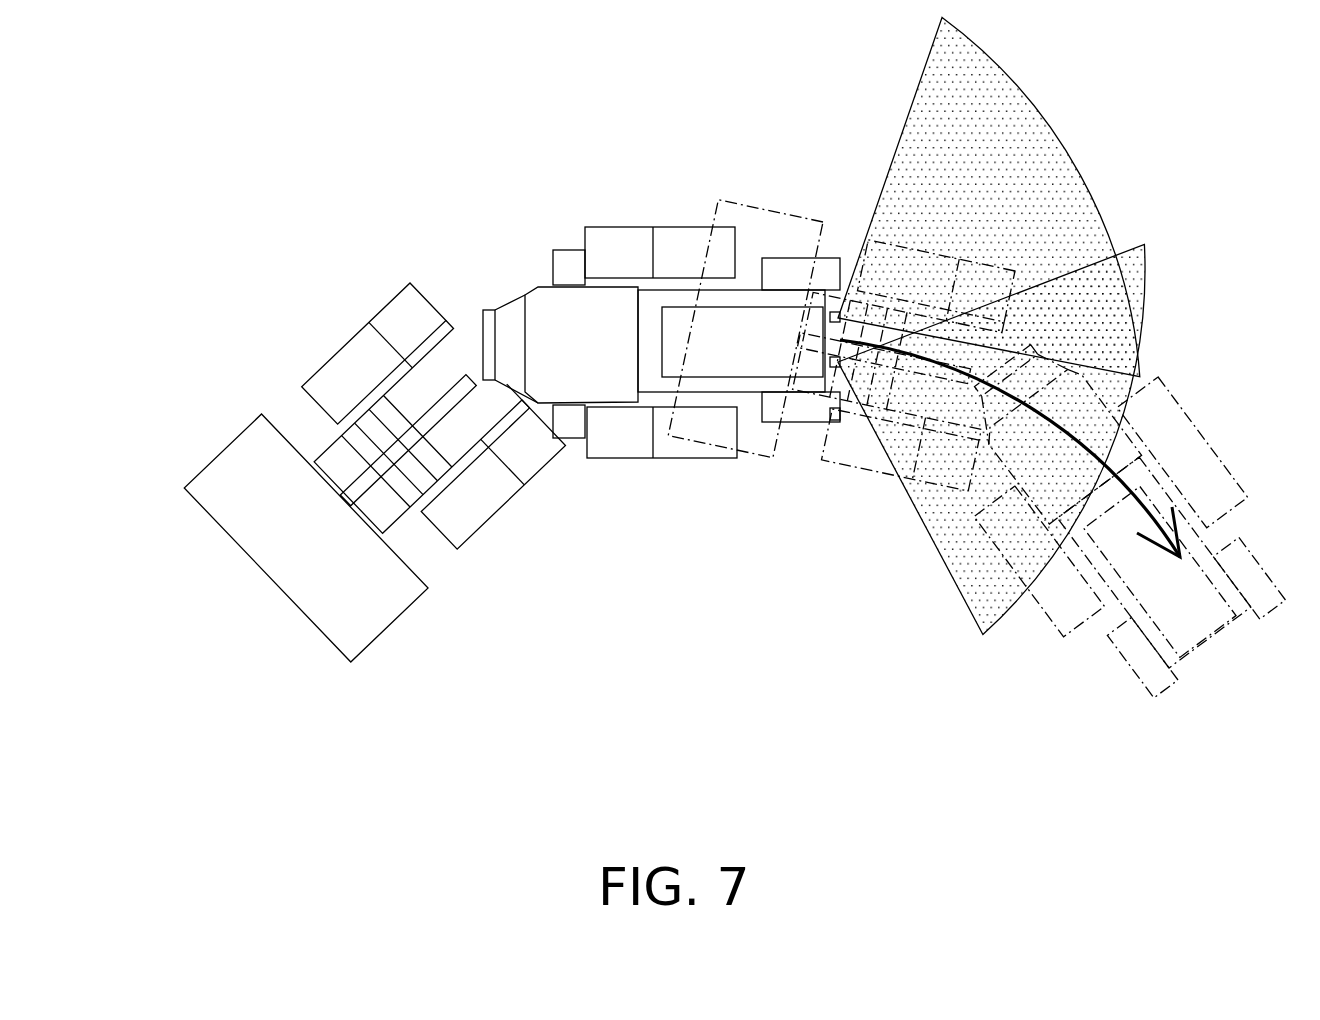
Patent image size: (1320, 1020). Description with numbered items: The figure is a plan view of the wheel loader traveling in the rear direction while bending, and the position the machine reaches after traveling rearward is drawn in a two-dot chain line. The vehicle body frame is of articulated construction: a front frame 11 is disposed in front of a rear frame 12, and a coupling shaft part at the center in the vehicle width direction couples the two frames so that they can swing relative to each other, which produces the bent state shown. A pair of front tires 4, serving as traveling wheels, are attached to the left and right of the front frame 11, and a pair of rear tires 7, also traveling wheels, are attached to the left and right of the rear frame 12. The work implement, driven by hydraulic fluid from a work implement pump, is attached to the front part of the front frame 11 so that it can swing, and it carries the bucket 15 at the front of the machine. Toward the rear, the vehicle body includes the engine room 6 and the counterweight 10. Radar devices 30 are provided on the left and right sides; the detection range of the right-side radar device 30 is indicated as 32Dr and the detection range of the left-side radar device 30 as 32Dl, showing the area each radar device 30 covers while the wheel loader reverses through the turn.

The front tires 4 is at (355, 360).
The engine room 6 is at (682, 337).
The rear tires 7 is at (637, 247).
The counterweight 10 is at (450, 237).
The front frame 11 is at (453, 430).
The rear frame 12 is at (592, 377).
The bucket 15 is at (327, 588).
The radar device 30 is at (835, 312).
The right detection range 32Dr is at (1012, 170).
The left detection range 32Dl is at (930, 555).